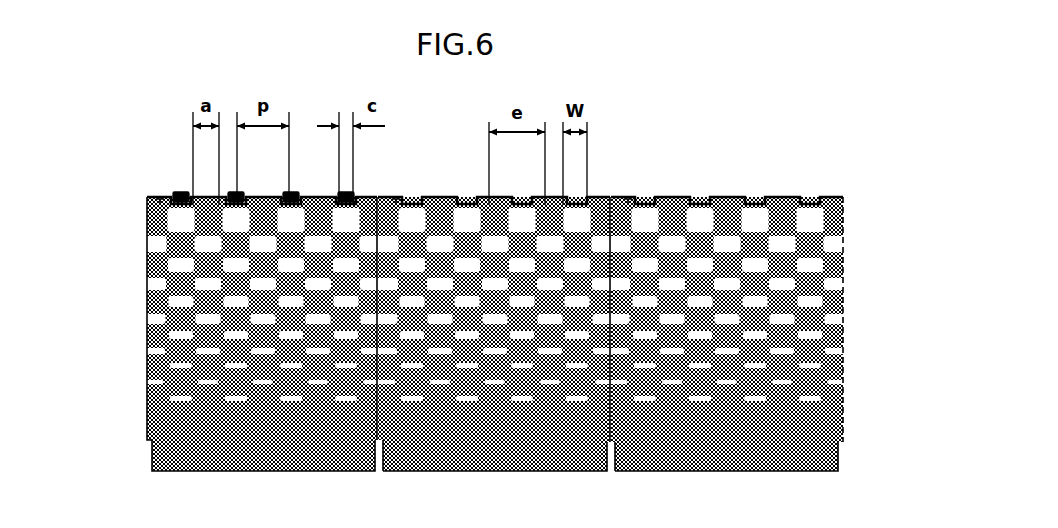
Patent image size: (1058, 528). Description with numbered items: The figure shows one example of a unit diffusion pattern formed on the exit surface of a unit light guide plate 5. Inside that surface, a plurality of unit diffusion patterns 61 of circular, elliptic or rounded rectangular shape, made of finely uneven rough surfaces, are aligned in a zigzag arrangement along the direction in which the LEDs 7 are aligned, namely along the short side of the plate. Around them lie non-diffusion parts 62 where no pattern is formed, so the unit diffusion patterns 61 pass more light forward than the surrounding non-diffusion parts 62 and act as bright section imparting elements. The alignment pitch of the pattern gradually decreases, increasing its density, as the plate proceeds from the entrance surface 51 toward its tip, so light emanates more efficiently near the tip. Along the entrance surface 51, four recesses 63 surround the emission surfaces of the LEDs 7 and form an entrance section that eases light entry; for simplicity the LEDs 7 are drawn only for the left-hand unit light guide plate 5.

The unit light guide plate 5 is at (449, 336).
The LED 7 is at (180, 192).
The entrance surface 51 is at (777, 200).
The unit diffusion pattern 61 is at (178, 246).
The non-diffusion part 62 is at (172, 308).
The recess 63 is at (643, 205).